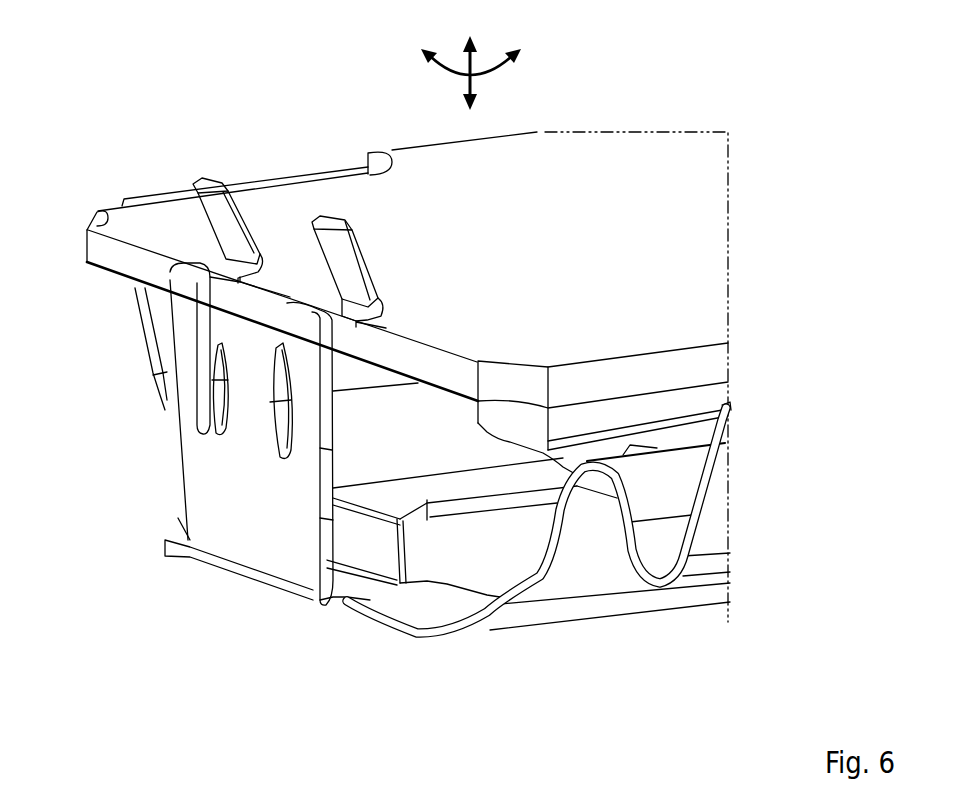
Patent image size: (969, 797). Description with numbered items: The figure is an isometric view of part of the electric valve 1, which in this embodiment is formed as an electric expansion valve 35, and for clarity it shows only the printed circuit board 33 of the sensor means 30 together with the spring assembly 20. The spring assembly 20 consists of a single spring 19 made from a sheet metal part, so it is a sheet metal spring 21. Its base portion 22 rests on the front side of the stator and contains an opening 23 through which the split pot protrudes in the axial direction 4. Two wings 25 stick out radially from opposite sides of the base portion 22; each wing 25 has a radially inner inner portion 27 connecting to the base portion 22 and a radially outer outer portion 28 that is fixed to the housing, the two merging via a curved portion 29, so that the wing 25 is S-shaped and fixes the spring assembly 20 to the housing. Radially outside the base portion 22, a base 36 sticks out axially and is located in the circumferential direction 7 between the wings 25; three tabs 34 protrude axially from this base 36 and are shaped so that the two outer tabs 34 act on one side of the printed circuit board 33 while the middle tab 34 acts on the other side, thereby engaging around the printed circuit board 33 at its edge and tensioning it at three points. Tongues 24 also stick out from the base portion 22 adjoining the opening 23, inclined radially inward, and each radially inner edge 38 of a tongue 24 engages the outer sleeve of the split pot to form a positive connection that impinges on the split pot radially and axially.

The electric valve 1 is at (474, 374).
The electric expansion valve 35 is at (474, 374).
The axial direction 4 is at (475, 88).
The circumferential direction 7 is at (442, 70).
The sensor means 30 is at (616, 158).
The printed circuit board 33 is at (700, 218).
The outer portion 28 is at (137, 297).
The wing 25 is at (415, 450).
The tab 34 is at (310, 377).
The base 36 is at (257, 517).
The radially inner edge 38 is at (362, 503).
The tongue 24 is at (372, 548).
The opening 23 is at (494, 564).
The base portion 22 is at (437, 617).
The spring 19 is at (610, 655).
The spring assembly 20 is at (610, 655).
The sheet metal spring 21 is at (571, 629).
The inner portion 27 is at (539, 543).
The curved portion 29 is at (657, 572).